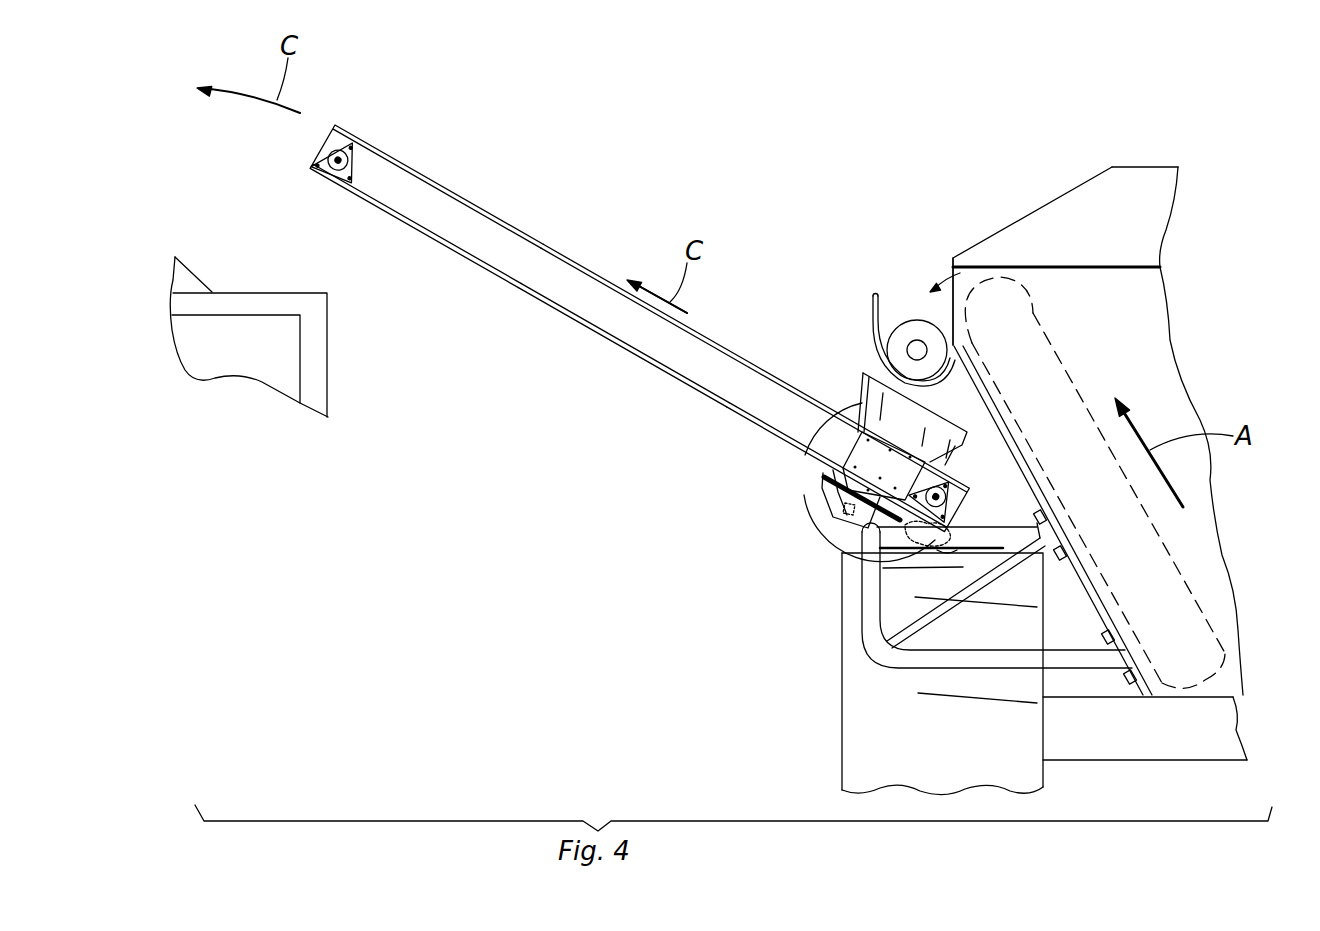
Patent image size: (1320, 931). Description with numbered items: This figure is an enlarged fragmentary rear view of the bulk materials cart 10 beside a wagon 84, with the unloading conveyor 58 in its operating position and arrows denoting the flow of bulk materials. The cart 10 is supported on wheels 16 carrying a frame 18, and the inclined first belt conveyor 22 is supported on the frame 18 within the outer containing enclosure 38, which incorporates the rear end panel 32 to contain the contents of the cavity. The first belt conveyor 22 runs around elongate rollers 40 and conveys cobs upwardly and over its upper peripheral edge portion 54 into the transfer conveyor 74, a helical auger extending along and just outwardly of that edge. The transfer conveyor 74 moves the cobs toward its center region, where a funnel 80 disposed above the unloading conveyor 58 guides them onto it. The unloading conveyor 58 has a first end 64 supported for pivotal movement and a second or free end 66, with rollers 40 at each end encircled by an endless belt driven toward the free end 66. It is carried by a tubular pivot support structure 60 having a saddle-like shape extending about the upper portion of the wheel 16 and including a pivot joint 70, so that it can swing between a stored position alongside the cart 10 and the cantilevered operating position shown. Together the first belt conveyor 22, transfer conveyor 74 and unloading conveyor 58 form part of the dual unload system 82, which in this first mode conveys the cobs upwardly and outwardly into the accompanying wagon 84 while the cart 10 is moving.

The bulk materials cart 10 is at (1242, 172).
The wheels 16 is at (960, 742).
The frame 18 is at (1163, 762).
The first belt conveyor 22 is at (1038, 318).
The rear end panel 32 is at (1128, 327).
The outer containing enclosure 38 is at (1095, 605).
The rollers 40 is at (337, 172).
The upper peripheral edge portion 54 is at (994, 277).
The unloading conveyor 58 is at (590, 272).
The pivot support structure 60 is at (842, 684).
The first end 64 is at (790, 405).
The free end 66 is at (392, 160).
The pivot joint 70 is at (833, 507).
The transfer conveyor 74 is at (912, 335).
The funnel 80 is at (800, 442).
The dual unload system 82 is at (748, 240).
The wagon 84 is at (330, 357).